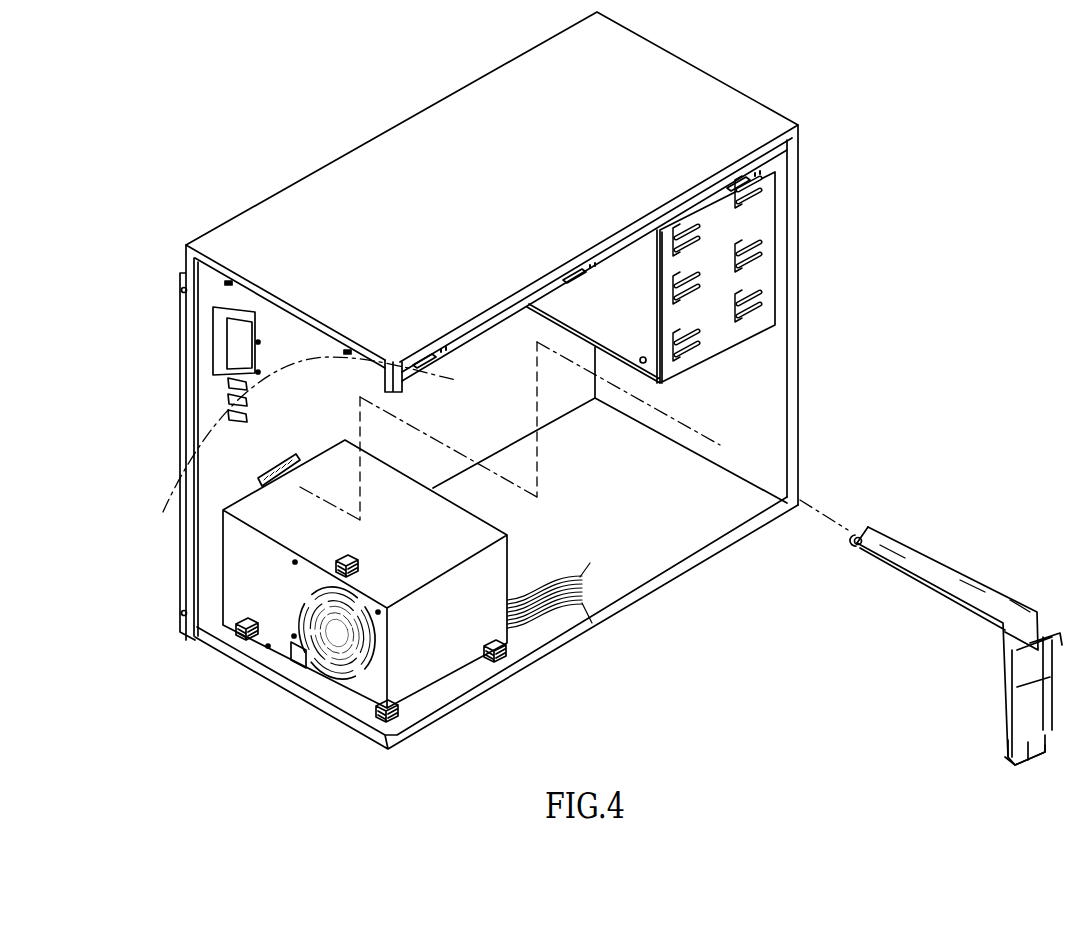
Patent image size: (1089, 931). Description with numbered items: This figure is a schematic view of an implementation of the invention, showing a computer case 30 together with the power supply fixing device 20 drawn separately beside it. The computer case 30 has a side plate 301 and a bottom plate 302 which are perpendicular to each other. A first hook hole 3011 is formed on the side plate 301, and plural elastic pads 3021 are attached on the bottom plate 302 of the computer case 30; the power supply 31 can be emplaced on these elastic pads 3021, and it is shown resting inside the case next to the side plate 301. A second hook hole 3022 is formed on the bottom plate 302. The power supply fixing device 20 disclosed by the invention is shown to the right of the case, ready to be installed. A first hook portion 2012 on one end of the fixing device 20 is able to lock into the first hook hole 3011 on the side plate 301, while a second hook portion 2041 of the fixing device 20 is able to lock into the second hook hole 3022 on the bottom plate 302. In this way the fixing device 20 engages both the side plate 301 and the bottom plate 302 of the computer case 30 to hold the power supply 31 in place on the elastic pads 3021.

The computer case 30 is at (452, 397).
The side plate 301 is at (257, 442).
The first hook hole 3011 is at (268, 473).
The power supply 31 is at (242, 572).
The elastic pads 3021 is at (237, 640).
The bottom plate 302 is at (655, 563).
The second hook hole 3022 is at (492, 660).
The power supply fixing device 20 is at (944, 601).
The first hook portion 2012 is at (873, 524).
The second hook portion 2041 is at (1010, 748).